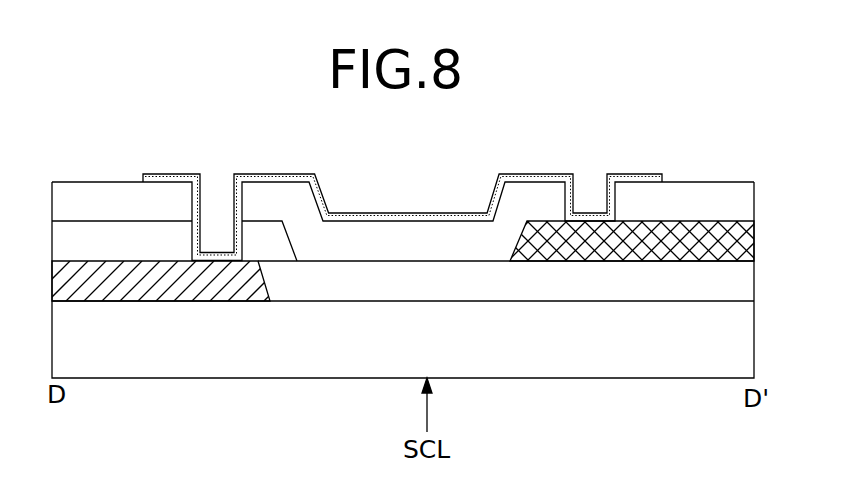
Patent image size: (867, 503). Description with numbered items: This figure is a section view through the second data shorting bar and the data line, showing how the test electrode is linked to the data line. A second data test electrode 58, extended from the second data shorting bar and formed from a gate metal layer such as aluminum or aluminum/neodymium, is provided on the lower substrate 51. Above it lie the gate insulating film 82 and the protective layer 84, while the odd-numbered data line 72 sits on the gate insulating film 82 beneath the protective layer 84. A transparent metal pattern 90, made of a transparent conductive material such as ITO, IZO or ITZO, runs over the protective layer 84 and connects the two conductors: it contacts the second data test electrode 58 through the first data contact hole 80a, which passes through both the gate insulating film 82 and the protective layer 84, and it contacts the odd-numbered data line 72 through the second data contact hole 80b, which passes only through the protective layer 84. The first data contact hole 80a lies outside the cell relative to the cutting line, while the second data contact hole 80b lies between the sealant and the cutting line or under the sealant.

The lower substrate 51 is at (754, 348).
The second data test electrode 58 is at (155, 301).
The odd-numbered data line 72 is at (754, 242).
The gate insulating film 82 is at (754, 277).
The protective layer 84 is at (754, 200).
The first data contact hole 80a is at (213, 176).
The second data contact hole 80b is at (589, 182).
The transparent metal pattern 90 is at (646, 173).